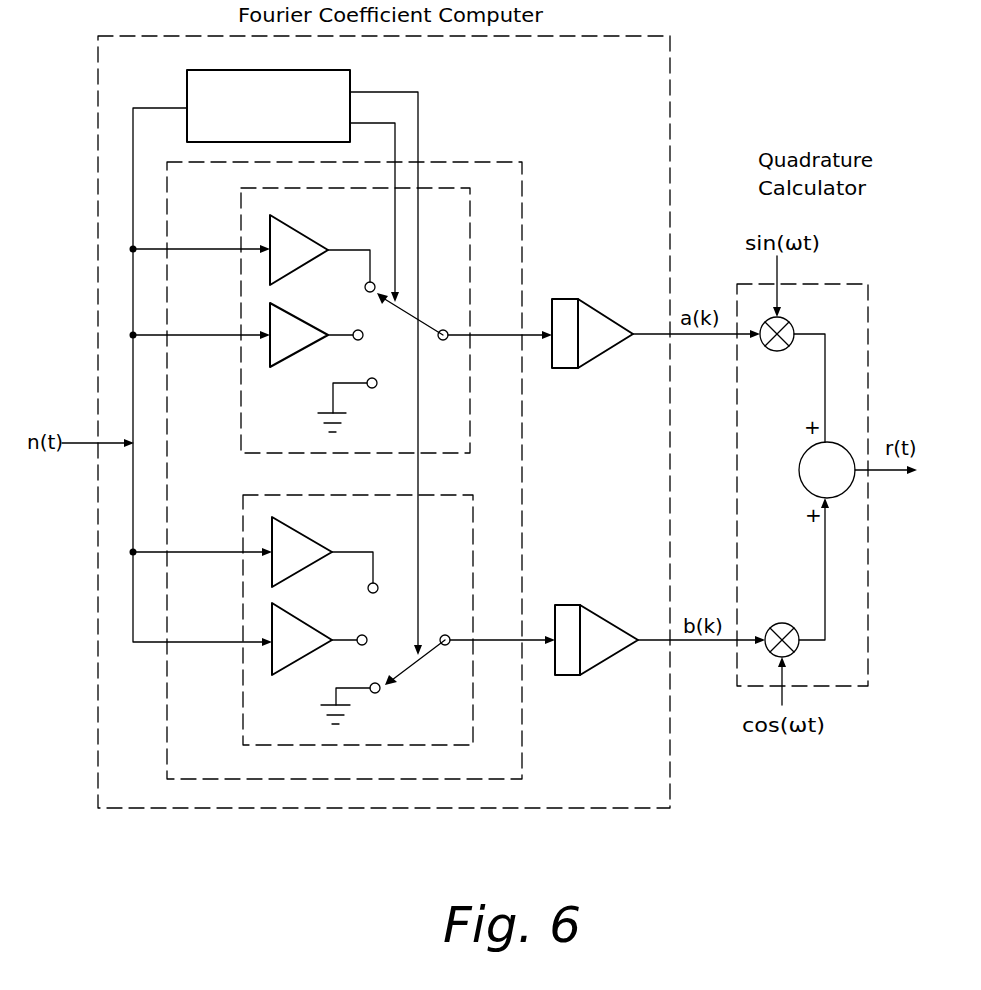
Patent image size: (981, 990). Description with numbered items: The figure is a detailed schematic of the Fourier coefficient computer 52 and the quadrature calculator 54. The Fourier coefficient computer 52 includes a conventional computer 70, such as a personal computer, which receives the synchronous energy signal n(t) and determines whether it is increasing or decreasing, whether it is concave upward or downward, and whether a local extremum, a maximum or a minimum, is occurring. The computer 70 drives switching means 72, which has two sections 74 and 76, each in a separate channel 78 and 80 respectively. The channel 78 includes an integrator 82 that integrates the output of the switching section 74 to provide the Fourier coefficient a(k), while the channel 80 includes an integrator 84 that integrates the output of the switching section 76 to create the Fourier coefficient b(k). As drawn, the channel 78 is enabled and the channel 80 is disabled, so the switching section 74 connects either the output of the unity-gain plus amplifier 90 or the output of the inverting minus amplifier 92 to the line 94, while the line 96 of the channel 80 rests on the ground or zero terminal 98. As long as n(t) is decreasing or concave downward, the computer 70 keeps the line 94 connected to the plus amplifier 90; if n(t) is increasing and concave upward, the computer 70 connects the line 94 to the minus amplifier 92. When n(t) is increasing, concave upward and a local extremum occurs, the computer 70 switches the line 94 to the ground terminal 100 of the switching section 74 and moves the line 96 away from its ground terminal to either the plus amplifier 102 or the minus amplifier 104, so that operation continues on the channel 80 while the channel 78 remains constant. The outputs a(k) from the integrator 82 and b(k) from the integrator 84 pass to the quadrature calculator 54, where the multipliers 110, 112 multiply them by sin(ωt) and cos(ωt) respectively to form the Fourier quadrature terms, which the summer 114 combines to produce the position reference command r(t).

The Fourier coefficient computer 52 is at (680, 75).
The quadrature calculator 54 is at (838, 276).
The conventional computer 70 is at (352, 76).
The switching means 72 is at (534, 163).
The switching section 74 is at (237, 300).
The switching section 76 is at (234, 583).
The channel 78 is at (427, 322).
The channel 80 is at (410, 665).
The integrator 82 is at (573, 290).
The integrator 84 is at (575, 596).
The +1 amplifier 90 is at (310, 232).
The −1 amplifier 92 is at (297, 312).
The line 94 is at (456, 352).
The line 96 is at (458, 651).
The ground terminal 98 is at (328, 697).
The ground terminal 100 is at (358, 390).
The plus amplifier 102 is at (305, 537).
The minus amplifier 104 is at (303, 616).
The multiplier 110 is at (790, 349).
The multiplier 112 is at (790, 624).
The summer 114 is at (798, 477).